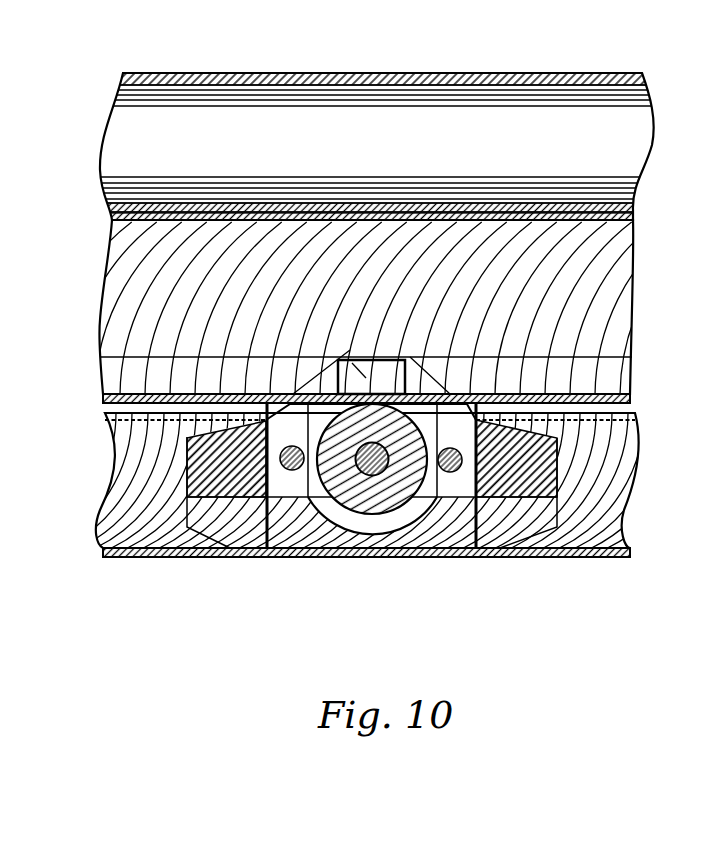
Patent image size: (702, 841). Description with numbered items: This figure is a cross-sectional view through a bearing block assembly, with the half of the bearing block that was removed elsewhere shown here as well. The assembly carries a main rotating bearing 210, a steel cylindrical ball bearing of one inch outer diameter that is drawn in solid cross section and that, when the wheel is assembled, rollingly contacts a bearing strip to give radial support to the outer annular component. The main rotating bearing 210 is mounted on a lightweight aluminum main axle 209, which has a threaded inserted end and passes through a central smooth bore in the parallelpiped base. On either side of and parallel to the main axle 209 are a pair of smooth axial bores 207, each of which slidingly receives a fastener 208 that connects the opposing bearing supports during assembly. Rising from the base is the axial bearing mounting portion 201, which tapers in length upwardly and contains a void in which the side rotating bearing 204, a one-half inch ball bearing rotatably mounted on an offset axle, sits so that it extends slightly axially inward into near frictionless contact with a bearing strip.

The axial bearing mounting portion 201 is at (320, 382).
The side rotating bearing 204 is at (340, 362).
The axial bores 207 is at (118, 465).
The fastener 208 is at (292, 470).
The main axle 209 is at (372, 464).
The main rotating bearing 210 is at (380, 531).